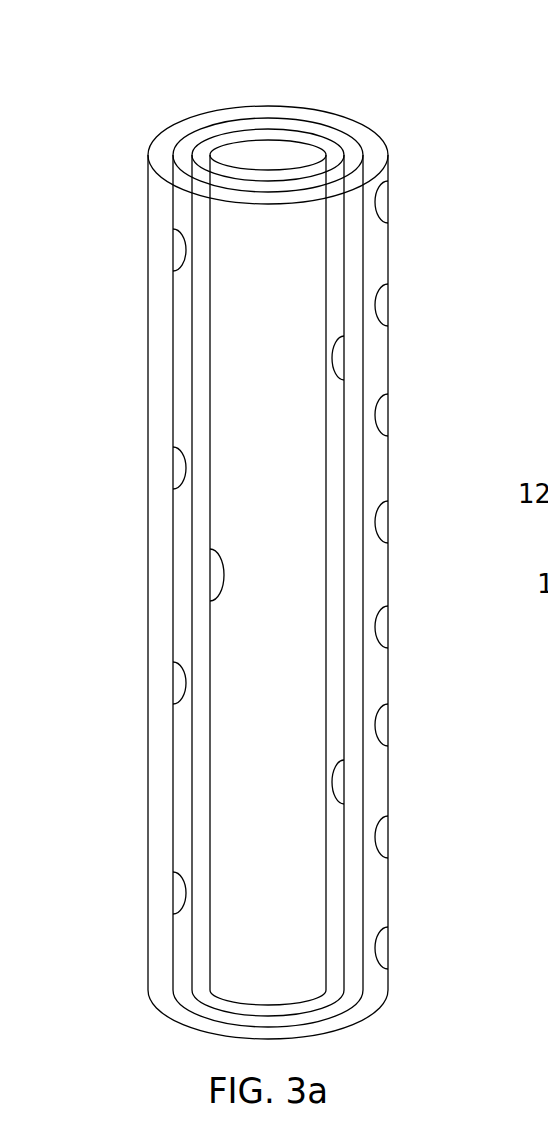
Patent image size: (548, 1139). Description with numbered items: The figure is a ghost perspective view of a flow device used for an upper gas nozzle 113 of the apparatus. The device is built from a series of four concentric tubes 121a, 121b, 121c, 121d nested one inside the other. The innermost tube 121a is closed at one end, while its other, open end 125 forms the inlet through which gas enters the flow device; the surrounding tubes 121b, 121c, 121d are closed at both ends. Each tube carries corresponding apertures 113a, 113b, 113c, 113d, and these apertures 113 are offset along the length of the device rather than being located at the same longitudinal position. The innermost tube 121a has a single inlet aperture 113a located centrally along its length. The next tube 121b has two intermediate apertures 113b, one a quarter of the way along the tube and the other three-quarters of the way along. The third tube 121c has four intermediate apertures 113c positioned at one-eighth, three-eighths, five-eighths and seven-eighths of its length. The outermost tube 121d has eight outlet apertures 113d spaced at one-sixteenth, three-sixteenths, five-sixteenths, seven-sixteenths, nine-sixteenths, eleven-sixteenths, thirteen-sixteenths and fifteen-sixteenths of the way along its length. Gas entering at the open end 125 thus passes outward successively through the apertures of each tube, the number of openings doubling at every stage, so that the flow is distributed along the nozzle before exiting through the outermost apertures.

The open end 125 is at (268, 157).
The tube 121a is at (205, 152).
The tube 121b is at (224, 127).
The tube 121c is at (340, 123).
The tube 121d is at (391, 148).
The apertures 113 is at (391, 237).
The inlet aperture 113a is at (208, 570).
The intermediate apertures 113b is at (347, 358).
The intermediate apertures 113c is at (170, 247).
The outlet apertures 113d is at (392, 297).